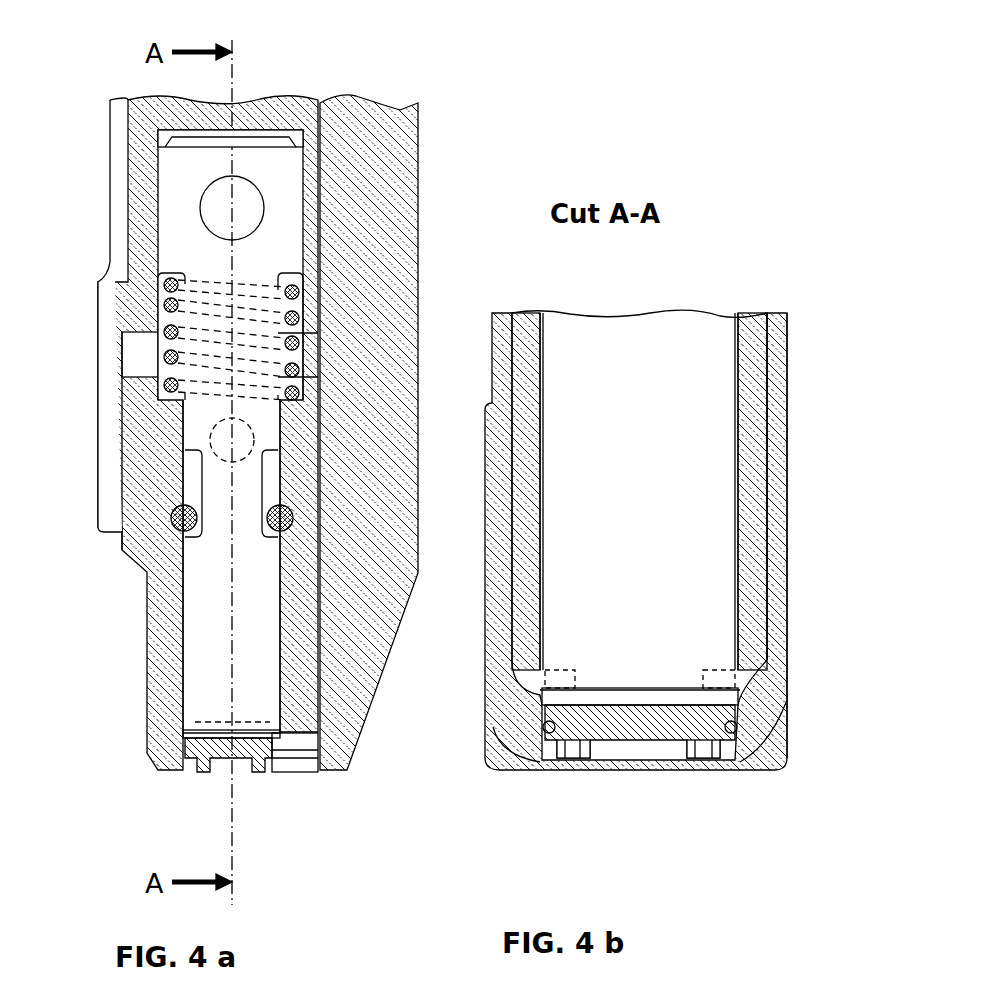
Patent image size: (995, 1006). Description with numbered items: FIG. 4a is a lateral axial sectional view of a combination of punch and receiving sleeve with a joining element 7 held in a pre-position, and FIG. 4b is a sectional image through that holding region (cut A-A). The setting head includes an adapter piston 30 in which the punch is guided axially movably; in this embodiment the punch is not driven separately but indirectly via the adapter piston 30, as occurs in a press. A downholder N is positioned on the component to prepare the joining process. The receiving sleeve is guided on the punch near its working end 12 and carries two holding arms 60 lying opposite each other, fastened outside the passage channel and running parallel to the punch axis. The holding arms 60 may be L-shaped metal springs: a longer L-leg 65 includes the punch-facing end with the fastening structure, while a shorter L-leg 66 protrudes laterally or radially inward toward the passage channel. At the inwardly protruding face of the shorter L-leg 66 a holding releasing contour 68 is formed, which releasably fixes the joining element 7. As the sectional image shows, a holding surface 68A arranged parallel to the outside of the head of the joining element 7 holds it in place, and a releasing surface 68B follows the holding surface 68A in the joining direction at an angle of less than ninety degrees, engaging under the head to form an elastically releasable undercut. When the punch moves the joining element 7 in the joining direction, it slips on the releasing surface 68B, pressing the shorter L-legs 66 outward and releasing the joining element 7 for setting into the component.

In FIG. 4a, the adapter piston 30 is at (148, 184).
In FIG. 4a, the downholder N is at (380, 238).
In FIG. 4a, the joining element 7 is at (218, 758).
In FIG. 4b, the joining element 7 is at (618, 750).
In FIG. 4b, the working end 12 is at (638, 367).
In FIG. 4b, the holding arms 60 is at (785, 380).
In FIG. 4b, the longer L-leg 65 is at (775, 503).
In FIG. 4b, the shorter L-leg 66 is at (765, 713).
In FIG. 4b, the holding releasing contour 68 is at (560, 747).
In FIG. 4b, the holding surface 68A is at (560, 740).
In FIG. 4b, the releasing surface 68B is at (693, 750).